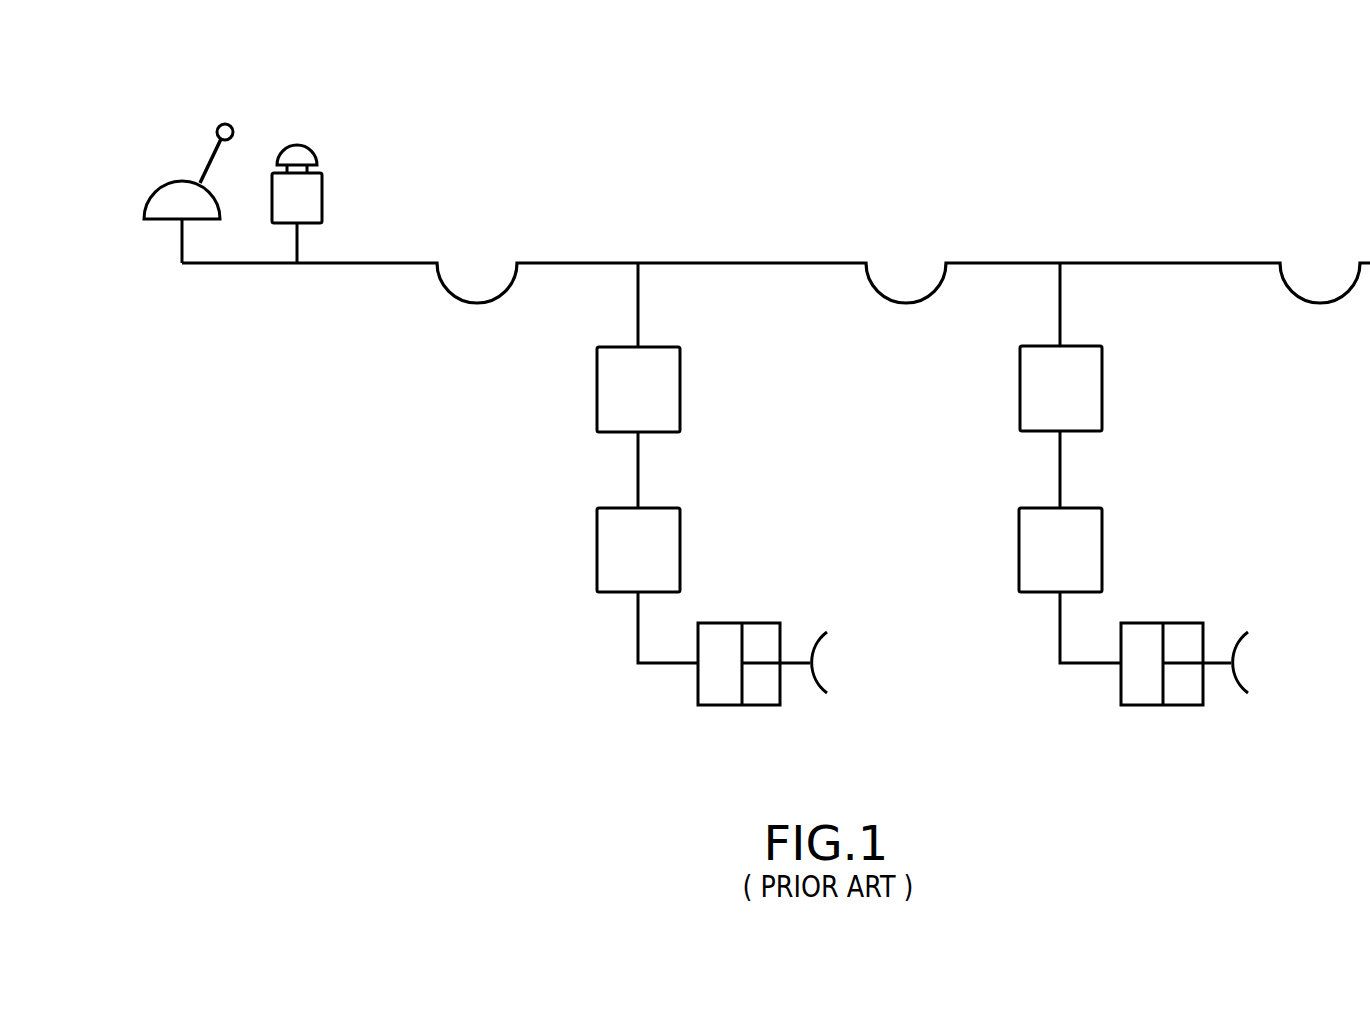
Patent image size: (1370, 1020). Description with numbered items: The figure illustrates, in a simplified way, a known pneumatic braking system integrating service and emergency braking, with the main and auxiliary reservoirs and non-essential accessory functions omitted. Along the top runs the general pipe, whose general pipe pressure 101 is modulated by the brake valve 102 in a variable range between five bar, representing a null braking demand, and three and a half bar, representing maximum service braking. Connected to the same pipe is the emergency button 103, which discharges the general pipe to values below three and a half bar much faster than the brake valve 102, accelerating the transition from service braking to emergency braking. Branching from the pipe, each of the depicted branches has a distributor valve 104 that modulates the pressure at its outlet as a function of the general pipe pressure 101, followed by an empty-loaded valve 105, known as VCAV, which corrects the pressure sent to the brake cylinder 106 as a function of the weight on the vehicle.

The general pipe pressure 101 is at (410, 263).
The brake valve 102 is at (173, 193).
The emergency button 103 is at (310, 195).
The distributor valve 104 is at (849, 347).
The empty-loaded valve 105 is at (849, 511).
The brake cylinder 106 is at (723, 677).